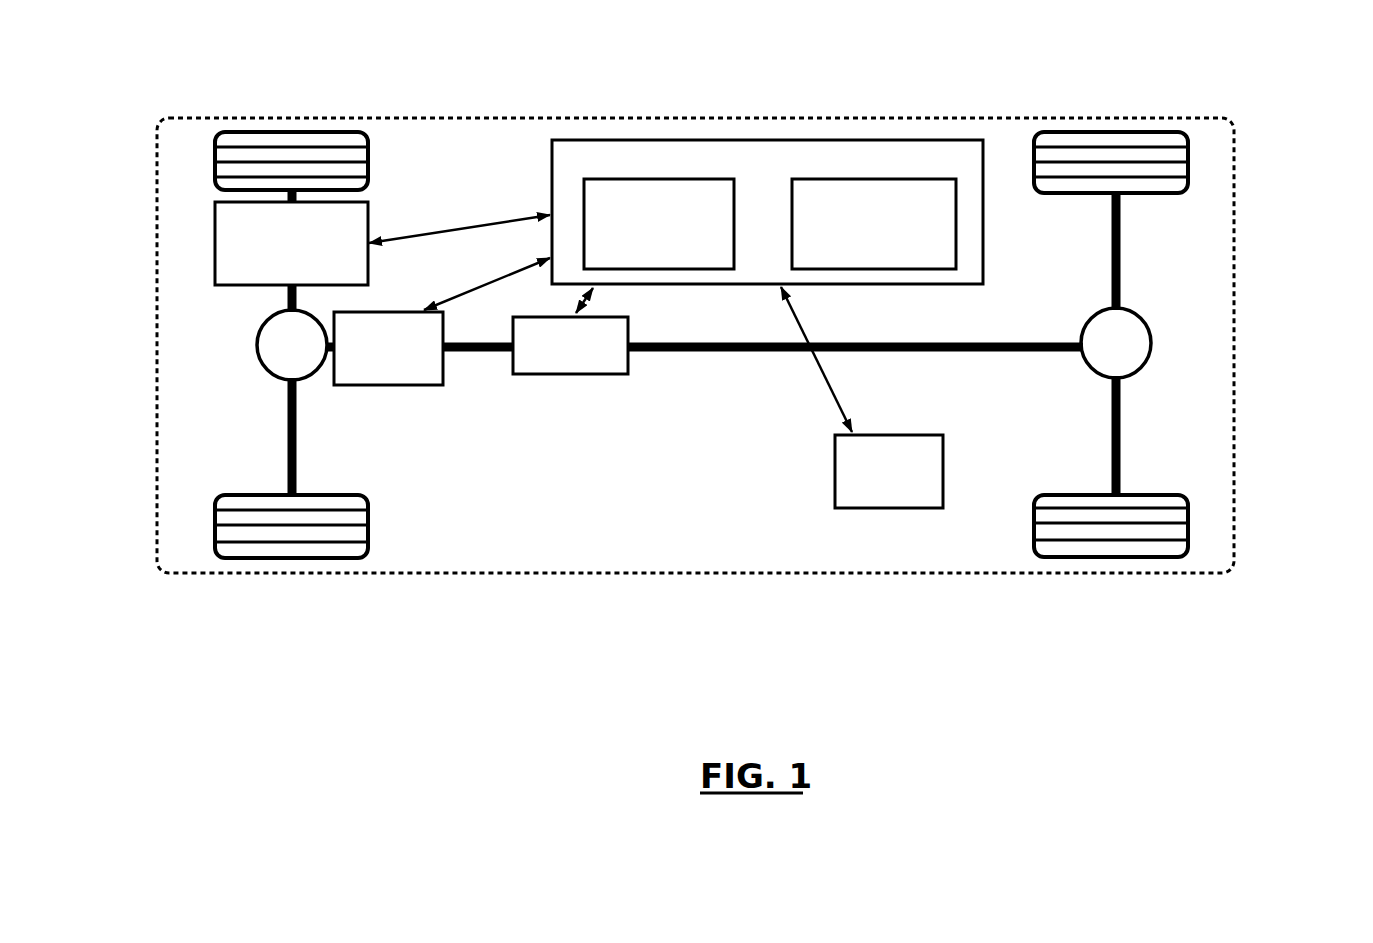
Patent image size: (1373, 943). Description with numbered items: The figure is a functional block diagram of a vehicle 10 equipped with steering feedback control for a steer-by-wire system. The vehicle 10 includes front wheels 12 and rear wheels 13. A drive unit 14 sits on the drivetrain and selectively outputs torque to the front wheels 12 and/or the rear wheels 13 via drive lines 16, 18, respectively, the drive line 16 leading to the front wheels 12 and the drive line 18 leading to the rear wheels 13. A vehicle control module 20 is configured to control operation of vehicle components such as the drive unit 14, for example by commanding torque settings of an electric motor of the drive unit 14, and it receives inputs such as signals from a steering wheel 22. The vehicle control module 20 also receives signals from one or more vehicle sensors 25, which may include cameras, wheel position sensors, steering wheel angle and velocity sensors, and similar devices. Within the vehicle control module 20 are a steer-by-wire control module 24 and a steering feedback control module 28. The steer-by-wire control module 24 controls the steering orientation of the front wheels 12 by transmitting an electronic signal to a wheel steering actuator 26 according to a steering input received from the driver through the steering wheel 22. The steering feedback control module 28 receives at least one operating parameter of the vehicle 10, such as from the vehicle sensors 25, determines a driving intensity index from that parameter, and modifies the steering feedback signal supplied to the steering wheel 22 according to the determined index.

The vehicle 10 is at (1302, 120).
The front wheels 12 is at (265, 131).
The rear wheels 13 is at (1093, 131).
The drive unit 14 is at (524, 375).
The drive line 16 is at (262, 358).
The drive line 18 is at (1152, 340).
The vehicle control module 20 is at (889, 140).
The steering wheel 22 is at (380, 386).
The steer-by-wire control module 24 is at (672, 269).
The vehicle sensors 25 is at (835, 488).
The wheel steering actuator 26 is at (215, 240).
The steering feedback control module 28 is at (938, 270).